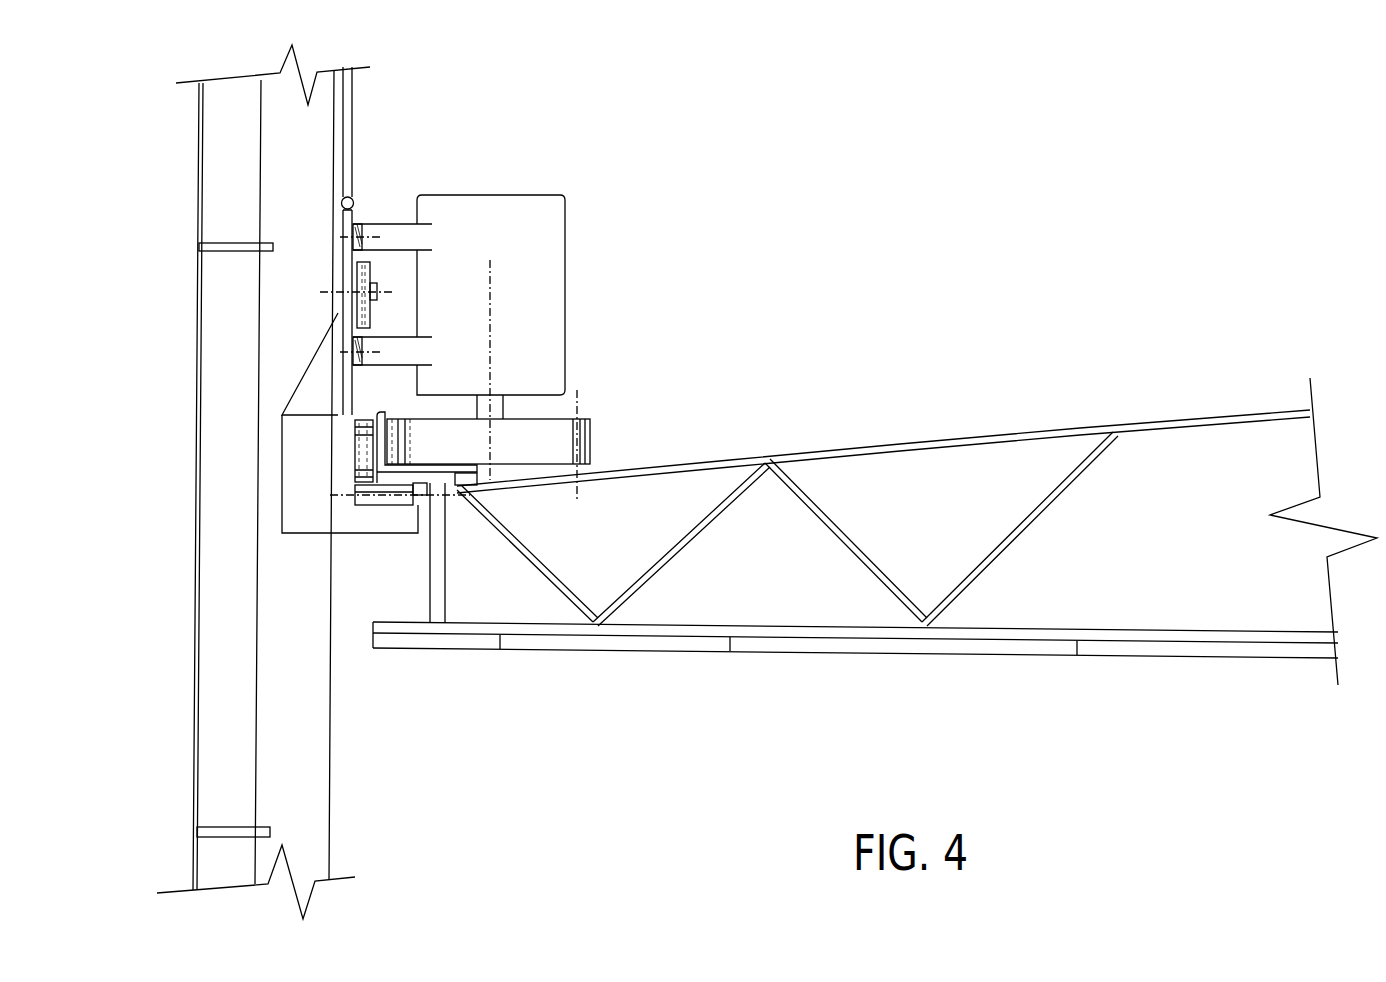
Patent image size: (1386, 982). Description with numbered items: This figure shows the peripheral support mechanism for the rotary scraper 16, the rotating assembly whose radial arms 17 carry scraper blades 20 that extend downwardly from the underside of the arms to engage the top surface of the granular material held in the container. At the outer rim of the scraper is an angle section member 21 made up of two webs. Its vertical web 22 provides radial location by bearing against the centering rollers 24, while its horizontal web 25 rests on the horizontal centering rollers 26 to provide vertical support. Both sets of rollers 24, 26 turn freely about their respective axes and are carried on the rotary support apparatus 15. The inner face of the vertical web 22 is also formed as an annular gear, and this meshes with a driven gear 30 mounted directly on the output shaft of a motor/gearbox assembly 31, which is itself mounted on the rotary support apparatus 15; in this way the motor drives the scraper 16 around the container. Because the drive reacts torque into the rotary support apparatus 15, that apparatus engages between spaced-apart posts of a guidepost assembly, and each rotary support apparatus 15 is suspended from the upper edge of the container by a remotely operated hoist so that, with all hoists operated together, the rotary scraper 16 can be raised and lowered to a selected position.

The rotary support apparatus 15 is at (353, 603).
The rotary scraper 16 is at (875, 507).
The radial arms 17 is at (965, 438).
The scraper blades 20 is at (450, 638).
The angle section member 21 is at (382, 417).
The vertical web 22 is at (385, 418).
The centering rollers 24 is at (347, 440).
The horizontal web 25 is at (455, 490).
The horizontal centering rollers 26 is at (393, 497).
The driven gear 30 is at (555, 443).
The motor/gearbox assembly 31 is at (548, 270).